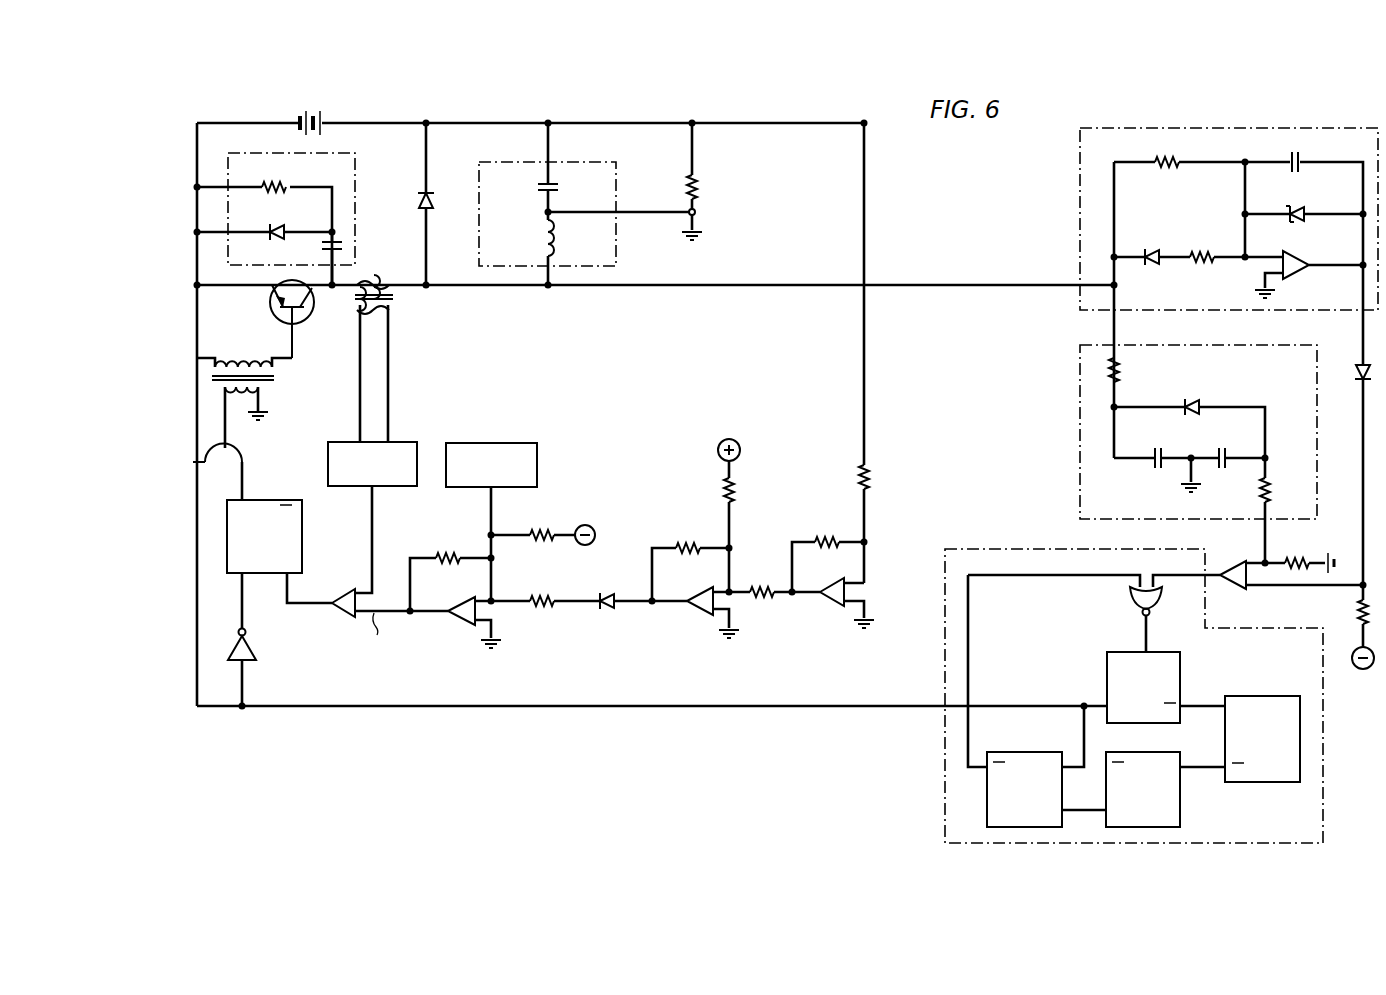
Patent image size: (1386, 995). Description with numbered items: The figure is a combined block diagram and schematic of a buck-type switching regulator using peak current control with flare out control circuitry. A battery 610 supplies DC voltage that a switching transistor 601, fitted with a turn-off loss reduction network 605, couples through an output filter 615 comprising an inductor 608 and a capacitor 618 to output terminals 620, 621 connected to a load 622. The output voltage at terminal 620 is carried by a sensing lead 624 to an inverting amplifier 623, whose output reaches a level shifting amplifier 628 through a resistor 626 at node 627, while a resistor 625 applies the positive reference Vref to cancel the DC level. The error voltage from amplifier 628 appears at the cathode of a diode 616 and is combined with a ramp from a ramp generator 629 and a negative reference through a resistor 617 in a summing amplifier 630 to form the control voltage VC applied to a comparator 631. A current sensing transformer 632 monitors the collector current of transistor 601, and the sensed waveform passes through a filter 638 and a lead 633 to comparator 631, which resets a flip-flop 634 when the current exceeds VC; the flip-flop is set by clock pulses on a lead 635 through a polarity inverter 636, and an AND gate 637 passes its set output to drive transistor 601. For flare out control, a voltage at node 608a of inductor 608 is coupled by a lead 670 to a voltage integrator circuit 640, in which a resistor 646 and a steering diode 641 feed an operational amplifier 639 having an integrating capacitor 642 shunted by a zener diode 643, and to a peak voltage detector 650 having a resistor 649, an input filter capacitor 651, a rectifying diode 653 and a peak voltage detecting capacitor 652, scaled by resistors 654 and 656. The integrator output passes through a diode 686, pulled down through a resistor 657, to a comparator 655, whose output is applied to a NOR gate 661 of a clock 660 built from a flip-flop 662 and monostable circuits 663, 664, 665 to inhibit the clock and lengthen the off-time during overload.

The battery 610 is at (530, 397).
The turn-off loss reduction network 605 is at (355, 172).
The output terminal 620 is at (563, 194).
The load 622 is at (711, 166).
The output terminal 621 is at (641, 221).
The capacitor 618 is at (530, 168).
The inductor 608 is at (529, 248).
The output filter 615 is at (575, 218).
The node 608a is at (548, 297).
The switching transistor 601 is at (278, 319).
The current sensing transformer 632 is at (311, 361).
The filter 638 is at (405, 448).
The AND gate 637 is at (234, 470).
The flip-flop 634 is at (302, 538).
The lead 633 is at (374, 517).
The polarity inverter 636 is at (259, 639).
The comparator 631 is at (385, 624).
The summing amplifier 630 is at (455, 600).
The ramp generator 629 is at (537, 462).
The resistor 617 is at (542, 526).
The diode 616 is at (589, 609).
The level shifting amplifier 628 is at (707, 612).
The resistor 626 is at (774, 604).
The node 627 is at (710, 569).
The resistor 625 is at (740, 506).
The inverting amplifier 623 is at (833, 582).
The sensing lead 624 is at (866, 366).
The lead 635 is at (545, 706).
The voltage integrator circuit 640 is at (1078, 208).
The resistor 646 is at (1238, 249).
The integrating capacitor 642 is at (1295, 153).
The zener diode 643 is at (1304, 209).
The steering diode 641 is at (1197, 246).
The operational amplifier 639 is at (1311, 275).
The lead 670 is at (655, 274).
The resistor 649 is at (1133, 370).
The rectifying diode 653 is at (1188, 418).
The input filter capacitor 651 is at (1152, 446).
The peak voltage detecting capacitor 652 is at (1225, 458).
The resistor 654 is at (1283, 512).
The peak voltage detector 650 is at (1078, 435).
The diode 686 is at (1344, 473).
The resistor 656 is at (1299, 553).
The comparator 655 is at (1260, 584).
The resistor 657 is at (1349, 627).
The NOR gate 661 is at (1079, 613).
The monostable circuit 663 is at (1107, 677).
The monostable circuit 664 is at (1266, 700).
The flip-flop 662 is at (1022, 764).
The monostable circuit 665 is at (1170, 808).
The clock 660 is at (946, 811).